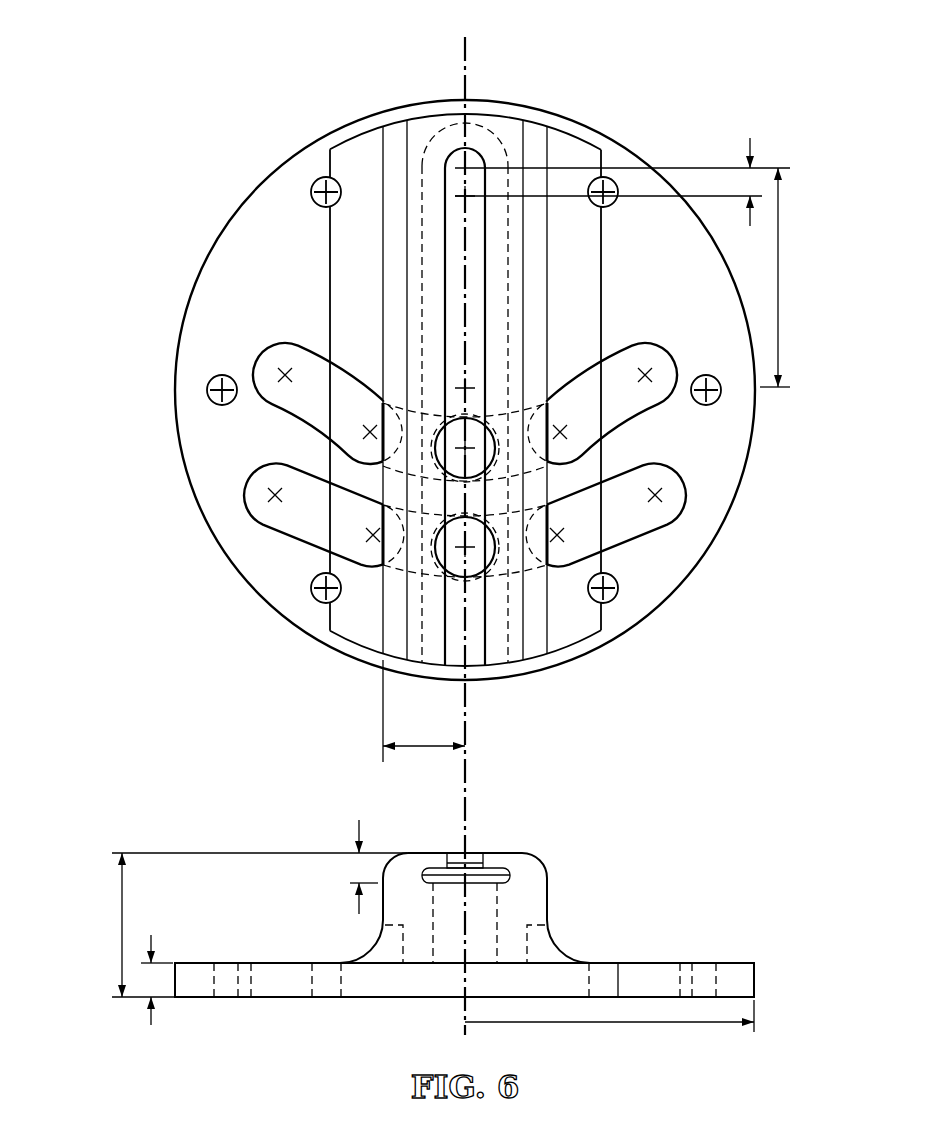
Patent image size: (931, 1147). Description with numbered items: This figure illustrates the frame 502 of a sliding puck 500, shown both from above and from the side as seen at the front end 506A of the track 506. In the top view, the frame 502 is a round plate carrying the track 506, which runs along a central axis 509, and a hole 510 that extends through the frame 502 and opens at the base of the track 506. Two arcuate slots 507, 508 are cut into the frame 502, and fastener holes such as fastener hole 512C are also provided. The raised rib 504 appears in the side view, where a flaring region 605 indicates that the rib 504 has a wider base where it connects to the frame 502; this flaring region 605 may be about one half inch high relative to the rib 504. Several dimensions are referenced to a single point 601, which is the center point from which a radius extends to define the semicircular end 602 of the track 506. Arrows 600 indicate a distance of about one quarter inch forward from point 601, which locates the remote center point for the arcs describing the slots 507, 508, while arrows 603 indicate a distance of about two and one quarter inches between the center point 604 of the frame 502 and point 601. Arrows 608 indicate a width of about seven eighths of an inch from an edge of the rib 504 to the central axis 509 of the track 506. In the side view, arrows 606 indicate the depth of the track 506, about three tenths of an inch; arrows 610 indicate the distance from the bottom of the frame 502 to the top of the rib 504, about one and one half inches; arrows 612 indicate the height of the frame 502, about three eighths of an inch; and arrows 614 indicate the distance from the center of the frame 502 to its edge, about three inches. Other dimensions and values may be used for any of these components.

The sliding puck 500 is at (630, 57).
The frame 502 is at (628, 145).
The rib 504 is at (497, 652).
The track 506 is at (474, 296).
The front end of track 506A is at (457, 652).
The slot 507 is at (270, 464).
The slot 508 is at (292, 347).
The central axis 509 is at (462, 50).
The hole 510 is at (490, 552).
The fastener hole 512C is at (222, 375).
The arrows 600 is at (751, 147).
The point 601 is at (455, 183).
The semicircular end 602 is at (480, 142).
The arrows 603 is at (779, 282).
The center point 604 is at (474, 380).
The flaring region 605 is at (368, 952).
The arrows 606 is at (359, 824).
The arrows 608 is at (410, 748).
The arrows 610 is at (122, 928).
The arrows 612 is at (151, 1018).
The arrows 614 is at (606, 1023).